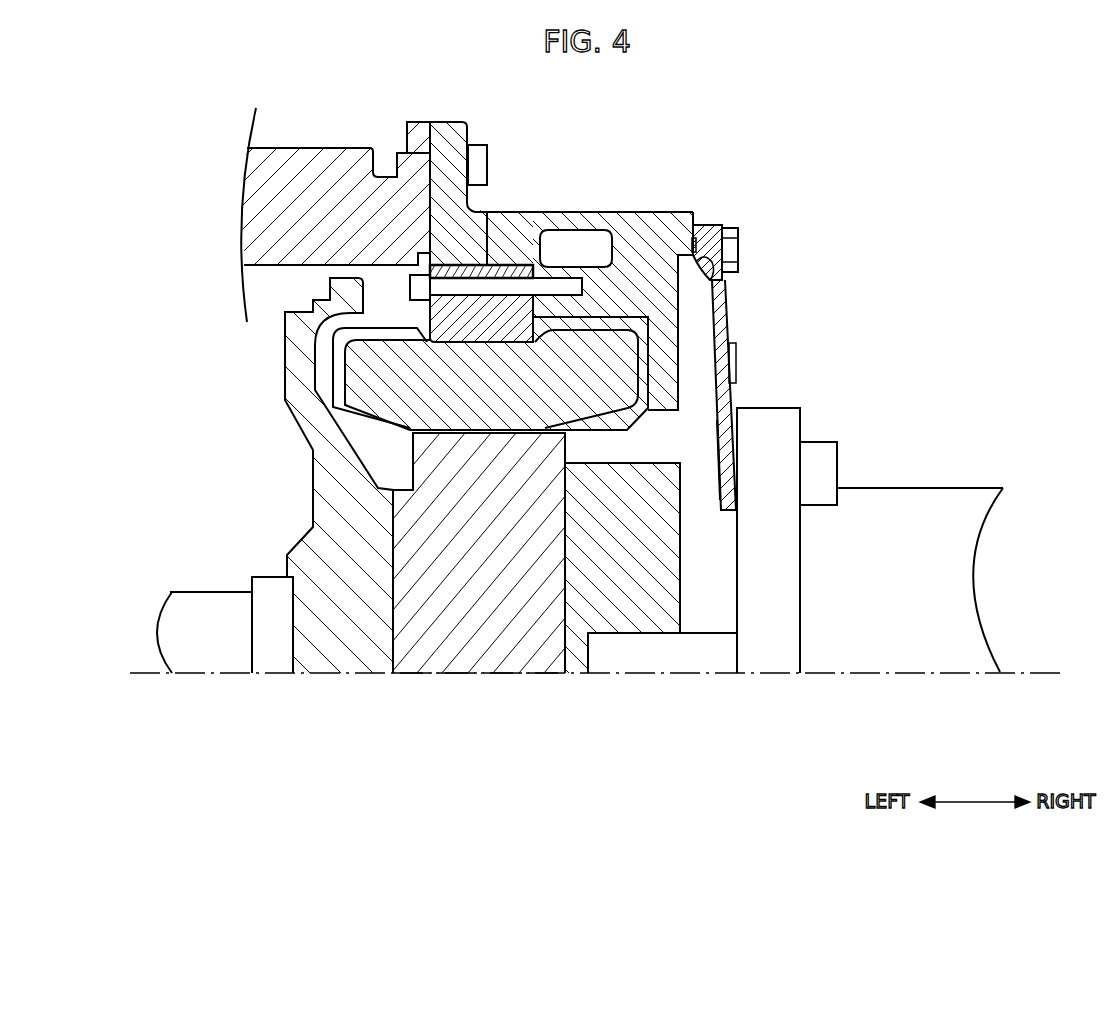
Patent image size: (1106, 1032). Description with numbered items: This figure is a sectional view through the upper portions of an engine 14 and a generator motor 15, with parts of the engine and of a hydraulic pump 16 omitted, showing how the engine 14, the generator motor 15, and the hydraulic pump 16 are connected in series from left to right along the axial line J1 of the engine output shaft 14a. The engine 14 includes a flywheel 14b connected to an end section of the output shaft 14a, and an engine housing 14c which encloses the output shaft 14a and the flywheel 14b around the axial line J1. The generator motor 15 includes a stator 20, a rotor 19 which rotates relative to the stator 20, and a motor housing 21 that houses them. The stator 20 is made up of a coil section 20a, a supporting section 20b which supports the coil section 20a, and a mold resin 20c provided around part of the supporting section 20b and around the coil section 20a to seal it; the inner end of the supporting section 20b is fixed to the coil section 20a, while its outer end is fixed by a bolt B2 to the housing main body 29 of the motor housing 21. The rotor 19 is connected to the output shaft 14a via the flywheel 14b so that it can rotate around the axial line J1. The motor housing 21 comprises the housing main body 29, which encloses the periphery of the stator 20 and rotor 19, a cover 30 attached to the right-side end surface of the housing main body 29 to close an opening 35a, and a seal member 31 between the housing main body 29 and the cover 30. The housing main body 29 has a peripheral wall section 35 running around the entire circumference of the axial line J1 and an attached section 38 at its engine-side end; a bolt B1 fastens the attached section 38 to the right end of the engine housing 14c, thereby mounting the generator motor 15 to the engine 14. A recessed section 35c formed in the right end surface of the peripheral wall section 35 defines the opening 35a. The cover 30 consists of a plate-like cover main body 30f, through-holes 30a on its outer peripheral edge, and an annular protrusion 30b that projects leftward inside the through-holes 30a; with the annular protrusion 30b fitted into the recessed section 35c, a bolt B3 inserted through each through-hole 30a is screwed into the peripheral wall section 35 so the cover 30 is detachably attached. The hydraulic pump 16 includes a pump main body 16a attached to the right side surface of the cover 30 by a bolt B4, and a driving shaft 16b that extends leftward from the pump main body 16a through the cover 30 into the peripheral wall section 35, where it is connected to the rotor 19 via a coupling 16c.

The engine 14 is at (312, 703).
The output shaft 14a is at (190, 602).
The flywheel 14b is at (330, 467).
The engine housing 14c is at (305, 157).
The generator motor 15 is at (507, 703).
The hydraulic pump 16 is at (840, 703).
The pump main body 16a is at (963, 584).
The driving shaft 16b is at (680, 677).
The coupling 16c is at (652, 575).
The rotor 19 is at (440, 677).
The stator 20 is at (637, 140).
The coil section 20a is at (588, 322).
The supporting section 20b is at (491, 263).
The mold resin 20c is at (625, 330).
The motor housing 21 is at (768, 140).
The housing main body 29 is at (665, 222).
The cover 30 is at (708, 237).
The through-holes 30a is at (735, 512).
The annular protrusion 30b is at (712, 288).
The cover main body 30f is at (732, 456).
The seal member 31 is at (690, 245).
The peripheral wall section 35 is at (643, 240).
The opening 35a is at (698, 412).
The recessed section 35c is at (695, 313).
The attached section 38 is at (448, 128).
The bolt B1 is at (478, 143).
The bolt B2 is at (410, 288).
The bolt B3 is at (740, 248).
The bolt B4 is at (838, 465).
The axial line J1 is at (1033, 674).